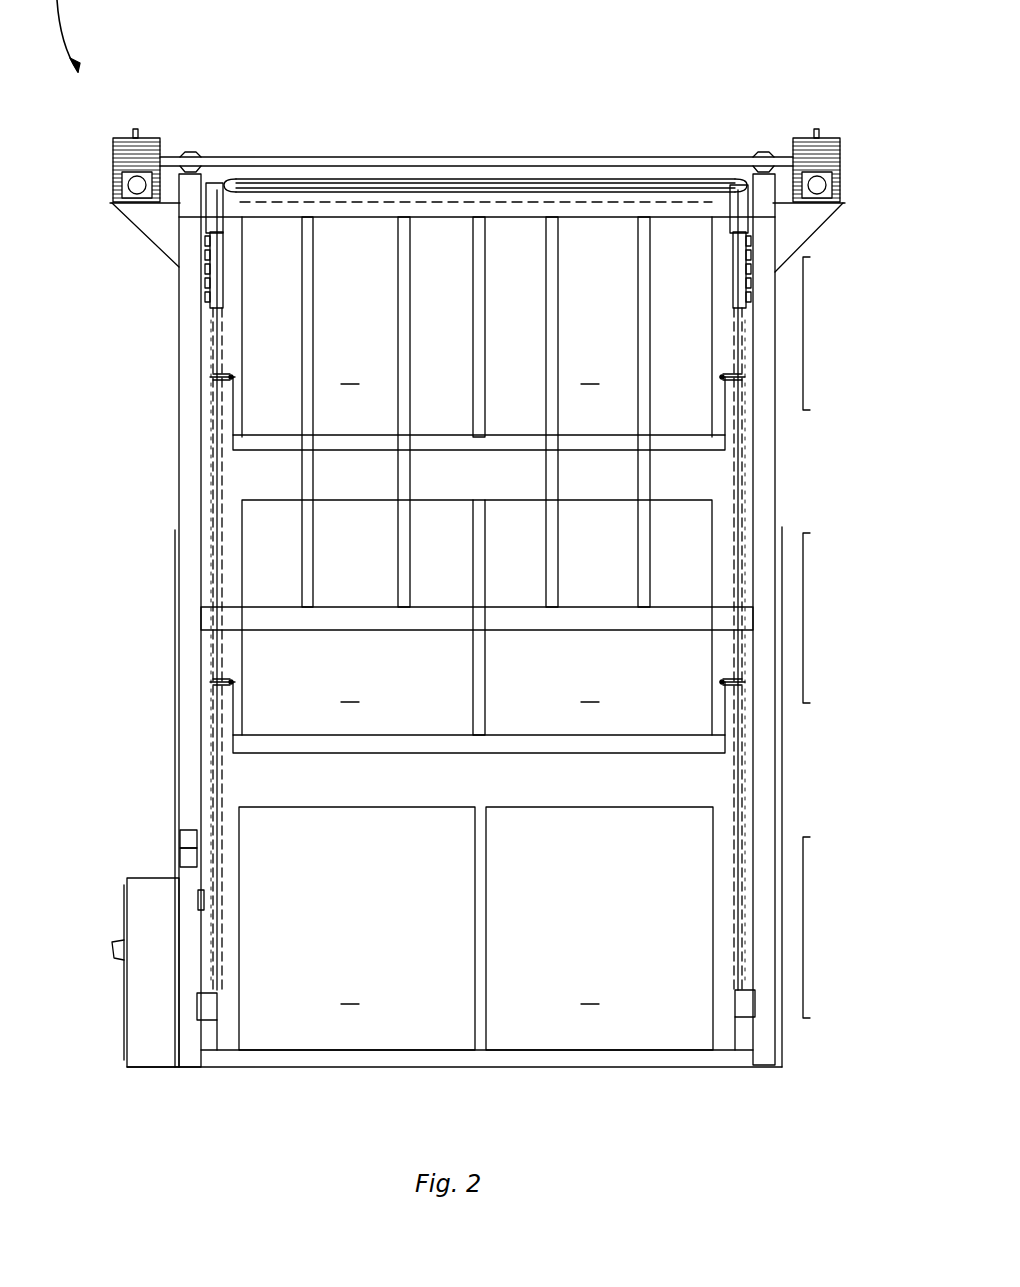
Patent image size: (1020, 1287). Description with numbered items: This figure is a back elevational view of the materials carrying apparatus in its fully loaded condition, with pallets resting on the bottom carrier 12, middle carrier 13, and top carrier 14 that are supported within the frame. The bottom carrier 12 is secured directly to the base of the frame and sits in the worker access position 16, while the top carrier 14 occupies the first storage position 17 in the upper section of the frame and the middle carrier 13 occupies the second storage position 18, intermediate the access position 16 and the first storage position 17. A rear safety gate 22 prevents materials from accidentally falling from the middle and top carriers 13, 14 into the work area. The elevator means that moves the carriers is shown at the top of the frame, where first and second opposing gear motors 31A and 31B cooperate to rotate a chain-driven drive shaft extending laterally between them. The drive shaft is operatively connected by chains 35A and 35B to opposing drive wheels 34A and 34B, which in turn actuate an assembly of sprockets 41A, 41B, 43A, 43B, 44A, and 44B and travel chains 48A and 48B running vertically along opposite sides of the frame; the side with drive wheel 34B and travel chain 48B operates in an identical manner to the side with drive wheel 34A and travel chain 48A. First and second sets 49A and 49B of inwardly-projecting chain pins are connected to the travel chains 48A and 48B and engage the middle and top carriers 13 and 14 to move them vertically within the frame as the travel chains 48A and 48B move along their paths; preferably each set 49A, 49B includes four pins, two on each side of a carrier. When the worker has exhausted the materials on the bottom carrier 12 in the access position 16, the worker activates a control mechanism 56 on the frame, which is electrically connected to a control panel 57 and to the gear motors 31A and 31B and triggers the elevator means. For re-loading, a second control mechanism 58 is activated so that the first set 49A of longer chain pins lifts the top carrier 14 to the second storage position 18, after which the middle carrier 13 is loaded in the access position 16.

The bottom carrier 12 is at (207, 1060).
The middle carrier 13 is at (240, 748).
The top carrier 14 is at (240, 442).
The worker access position 16 is at (803, 908).
The first storage position 17 is at (803, 333).
The second storage position 18 is at (803, 608).
The rear safety gate 22 is at (308, 318).
The first gear motor 31A is at (820, 138).
The second gear motor 31B is at (150, 138).
The drive wheel 34A is at (735, 290).
The drive wheel 34B is at (212, 302).
The chain 35A is at (790, 260).
The chain 35B is at (176, 258).
The sprocket 41A is at (735, 262).
The sprocket 41B is at (232, 250).
The sprocket 43A is at (744, 185).
The sprocket 43B is at (226, 235).
The sprocket 44A is at (736, 1025).
The sprocket 44B is at (215, 1025).
The travel chain 48A is at (215, 472).
The travel chain 48B is at (736, 455).
The first set of chain pins 49A is at (222, 375).
The second set of chain pins 49B is at (222, 680).
The control mechanism 56 is at (180, 835).
The control panel 57 is at (147, 1032).
The second control mechanism 58 is at (180, 860).